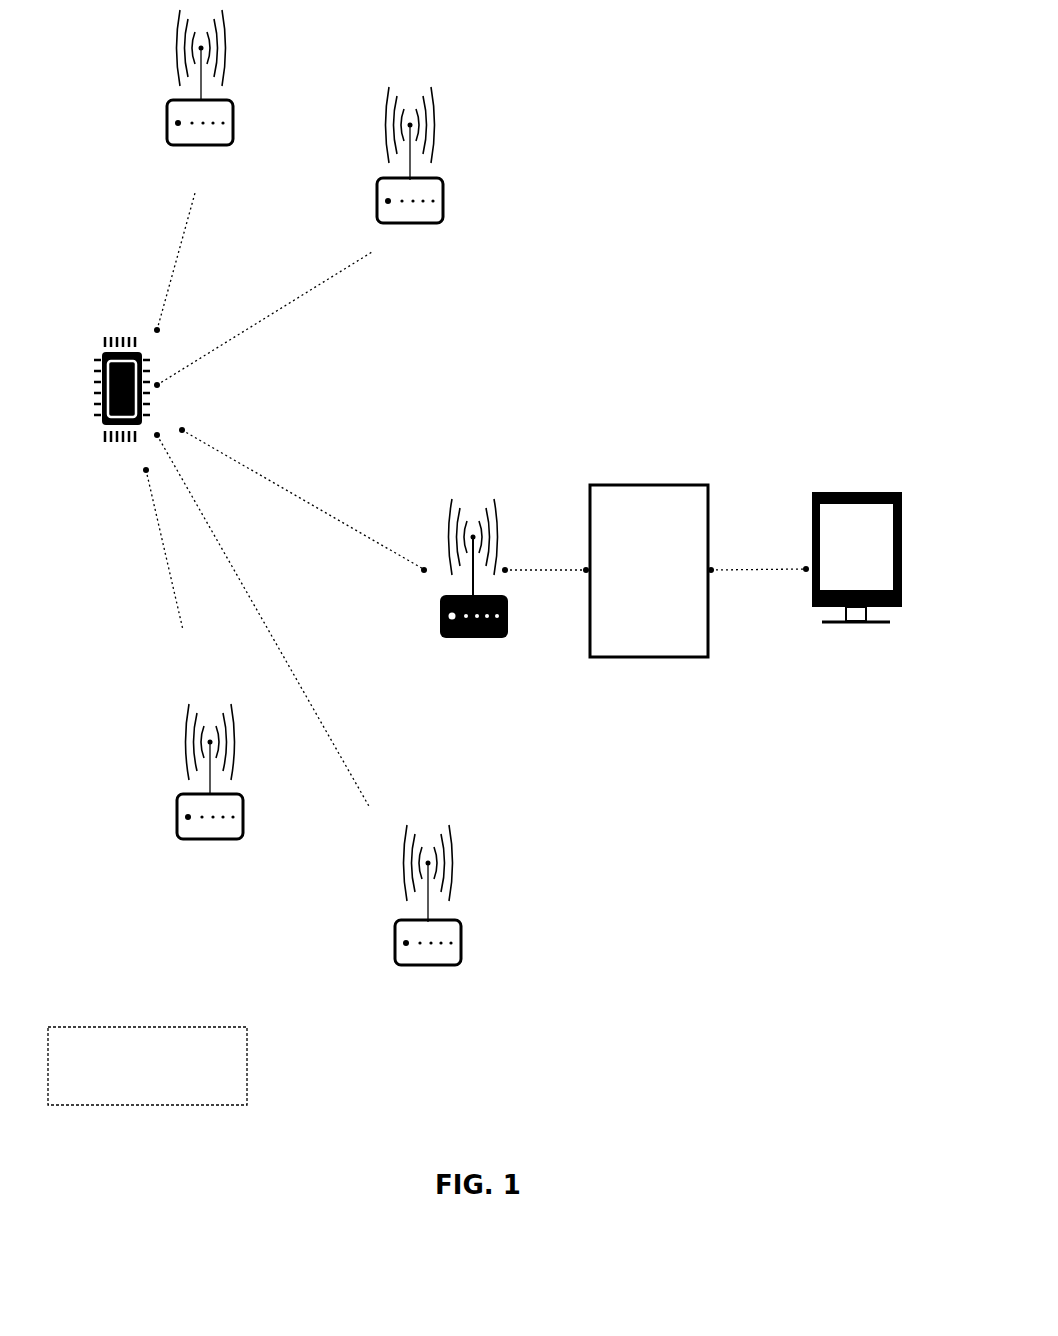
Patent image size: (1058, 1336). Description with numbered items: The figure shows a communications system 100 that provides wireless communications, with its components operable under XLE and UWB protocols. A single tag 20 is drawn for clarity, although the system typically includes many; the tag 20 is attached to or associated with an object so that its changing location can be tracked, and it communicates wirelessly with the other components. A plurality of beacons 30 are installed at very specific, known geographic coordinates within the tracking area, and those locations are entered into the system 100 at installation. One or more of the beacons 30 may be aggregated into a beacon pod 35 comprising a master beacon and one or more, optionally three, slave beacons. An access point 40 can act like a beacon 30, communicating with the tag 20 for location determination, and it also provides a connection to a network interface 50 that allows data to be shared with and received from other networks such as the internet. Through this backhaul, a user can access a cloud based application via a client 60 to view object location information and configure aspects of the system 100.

The communications system 100 is at (41, 112).
The tag 20 is at (253, 500).
The beacon 30 is at (328, 500).
The beacon pod 35 is at (149, 1087).
The access point 40 is at (503, 590).
The network interface 50 is at (694, 583).
The client 60 is at (868, 572).